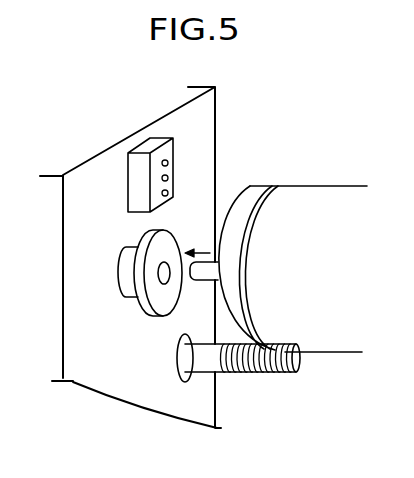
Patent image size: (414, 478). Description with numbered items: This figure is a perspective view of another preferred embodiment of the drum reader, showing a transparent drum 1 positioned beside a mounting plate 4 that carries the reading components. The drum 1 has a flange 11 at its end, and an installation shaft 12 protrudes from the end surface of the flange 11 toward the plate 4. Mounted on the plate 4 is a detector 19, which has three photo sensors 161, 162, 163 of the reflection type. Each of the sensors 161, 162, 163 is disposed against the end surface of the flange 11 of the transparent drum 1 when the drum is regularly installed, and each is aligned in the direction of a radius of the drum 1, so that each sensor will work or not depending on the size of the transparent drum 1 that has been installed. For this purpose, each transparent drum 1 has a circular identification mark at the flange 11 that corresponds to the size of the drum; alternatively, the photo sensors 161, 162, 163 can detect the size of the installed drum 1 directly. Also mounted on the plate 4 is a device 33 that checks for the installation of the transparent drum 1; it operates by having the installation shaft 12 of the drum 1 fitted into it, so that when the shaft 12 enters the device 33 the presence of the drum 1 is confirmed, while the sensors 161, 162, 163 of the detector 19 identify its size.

The transparent drum 1 is at (337, 192).
The mounting plate 4 is at (128, 137).
The flange 11 is at (272, 184).
The installation shaft 12 is at (205, 273).
The detector 19 is at (138, 183).
The installation checking device 33 is at (147, 300).
The photo sensor 161 is at (169, 195).
The photo sensor 162 is at (169, 178).
The photo sensor 163 is at (169, 160).